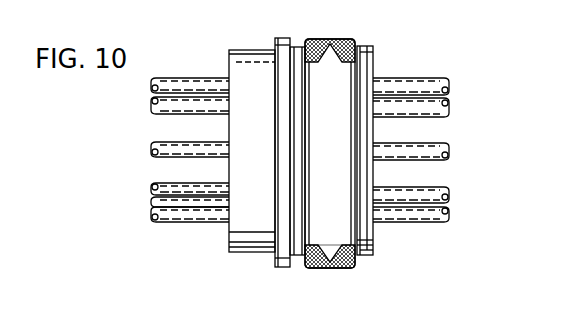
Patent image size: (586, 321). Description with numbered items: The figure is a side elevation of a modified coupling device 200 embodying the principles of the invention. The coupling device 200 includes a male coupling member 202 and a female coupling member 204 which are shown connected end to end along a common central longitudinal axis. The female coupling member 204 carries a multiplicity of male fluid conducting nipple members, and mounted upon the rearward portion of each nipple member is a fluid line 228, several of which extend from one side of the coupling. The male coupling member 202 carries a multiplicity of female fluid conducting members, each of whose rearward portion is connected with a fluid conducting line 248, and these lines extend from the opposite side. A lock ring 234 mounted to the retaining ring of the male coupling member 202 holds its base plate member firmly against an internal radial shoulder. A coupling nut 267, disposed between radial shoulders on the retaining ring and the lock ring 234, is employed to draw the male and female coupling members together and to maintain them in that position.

The coupling device 200 is at (341, 24).
The male coupling member 202 is at (364, 45).
The female coupling member 204 is at (245, 50).
The fluid line 228 is at (152, 190).
The lock ring 234 is at (375, 243).
The fluid conducting line 248 is at (432, 188).
The coupling nut 267 is at (352, 266).